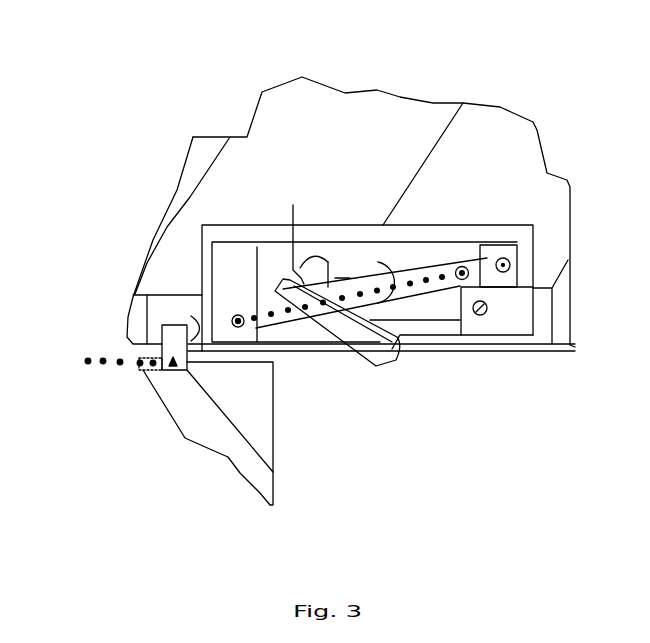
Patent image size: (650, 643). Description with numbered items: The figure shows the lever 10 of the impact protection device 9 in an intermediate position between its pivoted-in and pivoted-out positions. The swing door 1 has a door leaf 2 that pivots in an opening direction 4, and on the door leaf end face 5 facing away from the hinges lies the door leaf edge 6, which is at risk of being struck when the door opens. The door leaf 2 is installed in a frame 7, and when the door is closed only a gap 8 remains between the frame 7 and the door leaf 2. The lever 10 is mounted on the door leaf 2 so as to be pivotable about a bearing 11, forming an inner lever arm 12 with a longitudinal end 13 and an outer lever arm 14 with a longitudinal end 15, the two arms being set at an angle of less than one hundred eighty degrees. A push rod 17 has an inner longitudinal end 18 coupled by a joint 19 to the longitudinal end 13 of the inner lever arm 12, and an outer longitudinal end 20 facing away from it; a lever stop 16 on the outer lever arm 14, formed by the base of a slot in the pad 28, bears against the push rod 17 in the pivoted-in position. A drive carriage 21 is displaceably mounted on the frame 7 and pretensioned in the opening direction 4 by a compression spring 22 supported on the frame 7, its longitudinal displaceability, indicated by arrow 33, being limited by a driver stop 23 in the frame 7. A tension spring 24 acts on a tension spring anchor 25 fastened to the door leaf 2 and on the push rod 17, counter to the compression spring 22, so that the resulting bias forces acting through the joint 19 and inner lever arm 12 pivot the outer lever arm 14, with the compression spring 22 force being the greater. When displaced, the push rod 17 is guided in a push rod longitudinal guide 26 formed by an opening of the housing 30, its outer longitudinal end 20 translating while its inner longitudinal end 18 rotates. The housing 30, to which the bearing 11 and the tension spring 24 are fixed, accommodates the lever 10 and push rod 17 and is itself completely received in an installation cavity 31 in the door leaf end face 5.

The swing door 1 is at (155, 80).
The door leaf 2 is at (508, 108).
The opening direction 4 is at (427, 418).
The door leaf end face 5 is at (557, 351).
The door leaf edge 6 is at (575, 347).
The frame 7 is at (273, 433).
The gap 8 is at (286, 360).
The impact protection device 9 is at (318, 200).
The lever 10 is at (417, 364).
The bearing 11 is at (487, 309).
The inner lever arm 12 is at (482, 285).
The longitudinal end of the inner lever arm 13 is at (507, 250).
The outer lever arm 14 is at (417, 313).
The longitudinal end of the outer lever arm 15 is at (278, 280).
The lever stop 16 is at (371, 287).
The push rod 17 is at (314, 259).
The inner longitudinal end of the push rod 18 is at (491, 285).
The joint 19 is at (511, 264).
The outer longitudinal end of the push rod 20 is at (189, 317).
The drive carriage 21 is at (174, 347).
The compression spring 22 is at (103, 370).
The driver stop 23 is at (187, 370).
The tension spring 24 is at (425, 275).
The tension spring anchor 25 is at (240, 314).
The push rod longitudinal guide 26 is at (263, 342).
The pad 28 is at (337, 322).
The housing 30 is at (357, 225).
The installation cavity 31 is at (342, 273).
The arrow 33 is at (110, 338).